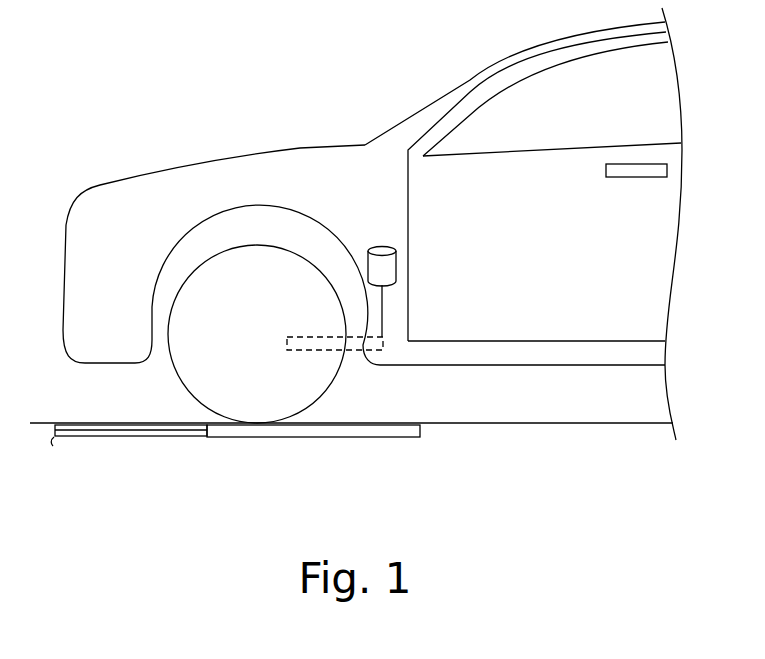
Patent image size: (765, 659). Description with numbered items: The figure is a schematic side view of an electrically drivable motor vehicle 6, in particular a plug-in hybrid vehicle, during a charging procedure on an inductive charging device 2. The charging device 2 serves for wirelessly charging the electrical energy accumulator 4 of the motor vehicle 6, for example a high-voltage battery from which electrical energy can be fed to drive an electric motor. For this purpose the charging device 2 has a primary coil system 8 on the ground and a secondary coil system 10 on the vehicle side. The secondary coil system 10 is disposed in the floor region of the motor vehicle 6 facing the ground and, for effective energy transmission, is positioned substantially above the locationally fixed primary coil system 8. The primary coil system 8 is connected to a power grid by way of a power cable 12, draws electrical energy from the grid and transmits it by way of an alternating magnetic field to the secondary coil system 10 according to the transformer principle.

The inductive charging device 2 is at (456, 446).
The electrical energy accumulator 4 is at (382, 265).
The electrically drivable motor vehicle 6 is at (296, 84).
The primary coil system 8 is at (297, 437).
The secondary coil system 10 is at (357, 345).
The power cable 12 is at (150, 437).